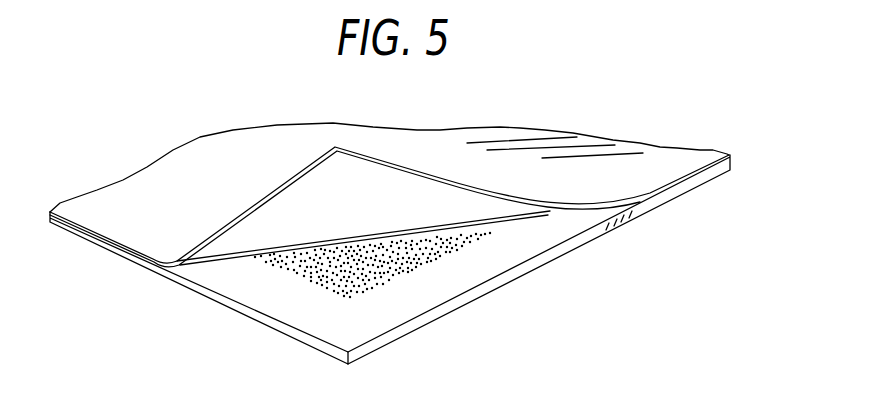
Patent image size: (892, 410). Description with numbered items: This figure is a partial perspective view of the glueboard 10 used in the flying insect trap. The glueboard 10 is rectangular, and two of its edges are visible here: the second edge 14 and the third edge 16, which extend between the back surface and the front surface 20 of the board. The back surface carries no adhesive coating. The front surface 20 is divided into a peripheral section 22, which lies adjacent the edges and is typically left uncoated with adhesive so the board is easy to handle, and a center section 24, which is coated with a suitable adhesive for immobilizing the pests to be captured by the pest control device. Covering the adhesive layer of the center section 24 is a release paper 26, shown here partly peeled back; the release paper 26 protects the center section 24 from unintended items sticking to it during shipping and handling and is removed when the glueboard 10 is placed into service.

The glueboard 10 is at (390, 235).
The second edge 14 is at (300, 341).
The third edge 16 is at (413, 333).
The front surface 20 is at (470, 276).
The peripheral section 22 is at (228, 277).
The center section 24 is at (333, 268).
The release paper 26 is at (377, 182).